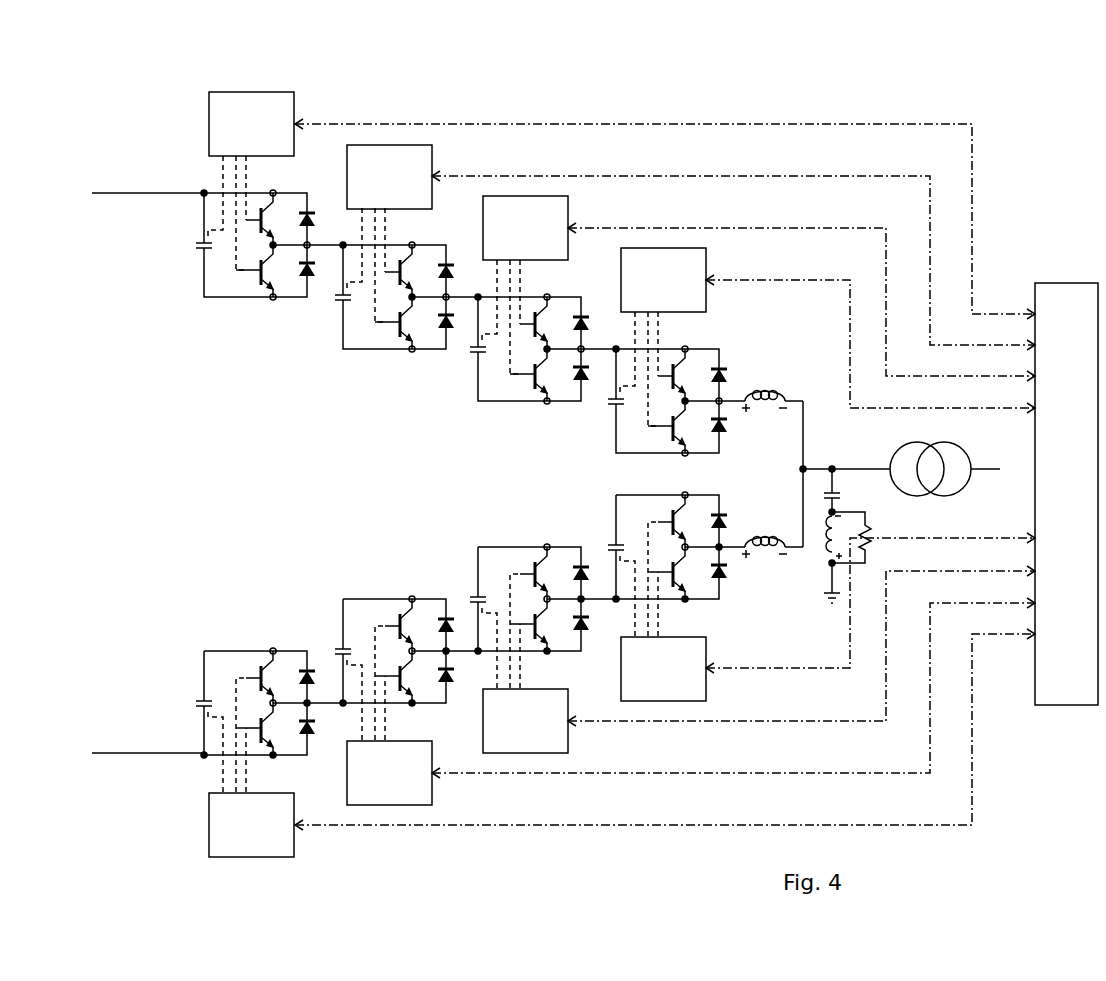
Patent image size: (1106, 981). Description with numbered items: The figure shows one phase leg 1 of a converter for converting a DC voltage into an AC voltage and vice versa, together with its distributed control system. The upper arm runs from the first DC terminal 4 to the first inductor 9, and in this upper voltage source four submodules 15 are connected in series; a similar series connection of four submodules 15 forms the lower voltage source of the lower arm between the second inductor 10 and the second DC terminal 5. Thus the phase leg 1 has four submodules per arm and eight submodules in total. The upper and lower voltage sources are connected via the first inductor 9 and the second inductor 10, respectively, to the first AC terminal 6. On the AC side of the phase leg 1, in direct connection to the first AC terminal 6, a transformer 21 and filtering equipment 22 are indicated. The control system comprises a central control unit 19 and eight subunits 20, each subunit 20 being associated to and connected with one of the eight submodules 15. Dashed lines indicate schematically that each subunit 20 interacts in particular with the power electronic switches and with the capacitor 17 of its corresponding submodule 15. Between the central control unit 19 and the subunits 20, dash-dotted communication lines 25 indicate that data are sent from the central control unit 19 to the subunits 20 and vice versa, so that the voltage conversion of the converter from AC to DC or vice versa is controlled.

The phase leg 1 is at (806, 437).
The first DC terminal 4 is at (132, 192).
The second DC terminal 5 is at (133, 754).
The first AC terminal 6 is at (800, 470).
The first inductor 9 is at (770, 392).
The second inductor 10 is at (770, 556).
The submodule 15 is at (473, 474).
The capacitor 17 is at (389, 474).
The central control unit 19 is at (1068, 283).
The subunit 20 is at (250, 92).
The transformer 21 is at (952, 452).
The filtering equipment 22 is at (886, 525).
The communication lines 25 is at (805, 126).